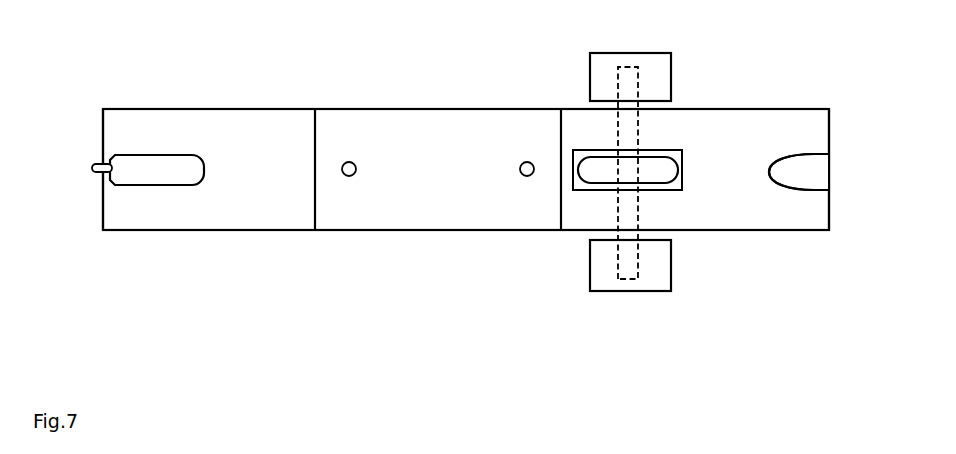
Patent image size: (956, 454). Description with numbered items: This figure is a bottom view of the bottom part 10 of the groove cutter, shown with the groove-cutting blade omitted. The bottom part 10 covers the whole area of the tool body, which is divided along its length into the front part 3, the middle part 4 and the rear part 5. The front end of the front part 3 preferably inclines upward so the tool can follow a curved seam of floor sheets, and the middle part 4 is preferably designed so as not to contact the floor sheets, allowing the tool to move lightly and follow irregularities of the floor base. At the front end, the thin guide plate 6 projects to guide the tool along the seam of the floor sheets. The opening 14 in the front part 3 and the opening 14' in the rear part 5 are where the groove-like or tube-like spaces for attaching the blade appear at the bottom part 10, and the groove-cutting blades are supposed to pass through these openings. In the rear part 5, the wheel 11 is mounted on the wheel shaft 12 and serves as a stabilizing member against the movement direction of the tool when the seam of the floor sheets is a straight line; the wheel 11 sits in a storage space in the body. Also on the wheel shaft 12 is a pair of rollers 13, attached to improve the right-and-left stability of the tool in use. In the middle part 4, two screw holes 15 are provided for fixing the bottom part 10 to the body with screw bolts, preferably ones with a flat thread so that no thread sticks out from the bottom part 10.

The bottom part 10 is at (387, 63).
The front part 3 is at (103, 253).
The middle part 4 is at (561, 253).
The rear part 5 is at (563, 303).
The thin guide plate 6 is at (93, 166).
The wheel 11 is at (656, 168).
The wheel shaft 12 is at (618, 130).
The pair of rollers 13 is at (661, 266).
The opening 14 is at (121, 188).
The opening 14' is at (821, 185).
The screw hole 15 is at (522, 174).